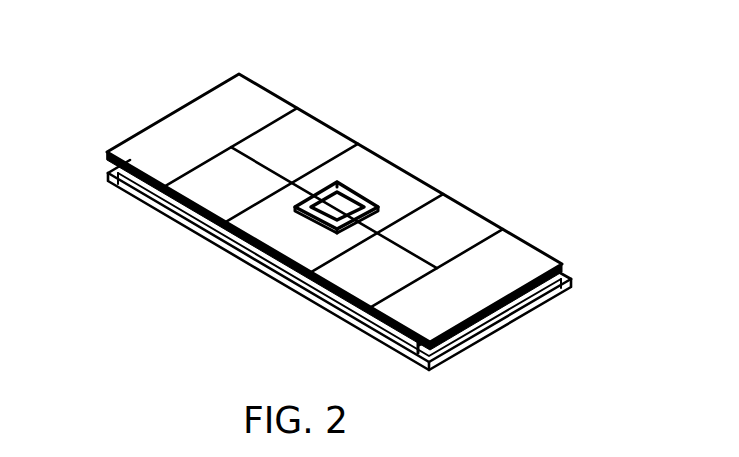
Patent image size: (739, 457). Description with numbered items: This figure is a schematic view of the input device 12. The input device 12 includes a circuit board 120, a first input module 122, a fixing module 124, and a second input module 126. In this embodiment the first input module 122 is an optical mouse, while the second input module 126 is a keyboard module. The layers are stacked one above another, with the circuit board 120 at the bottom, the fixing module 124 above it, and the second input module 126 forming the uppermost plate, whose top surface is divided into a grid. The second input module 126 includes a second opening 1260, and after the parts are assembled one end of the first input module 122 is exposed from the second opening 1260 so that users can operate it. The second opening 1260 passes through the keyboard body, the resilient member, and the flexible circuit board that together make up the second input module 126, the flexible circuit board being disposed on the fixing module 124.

The input device 12 is at (355, 89).
The second input module 126 is at (197, 123).
The fixing module 124 is at (187, 211).
The circuit board 120 is at (242, 263).
The first input module 122 is at (357, 191).
The second opening 1260 is at (320, 228).